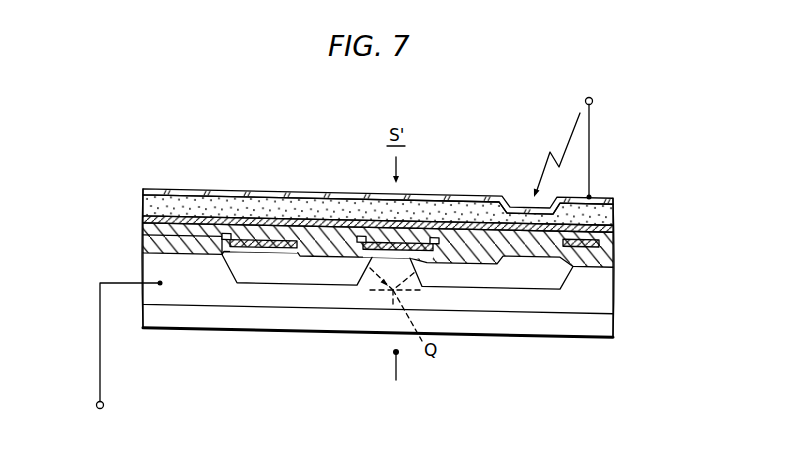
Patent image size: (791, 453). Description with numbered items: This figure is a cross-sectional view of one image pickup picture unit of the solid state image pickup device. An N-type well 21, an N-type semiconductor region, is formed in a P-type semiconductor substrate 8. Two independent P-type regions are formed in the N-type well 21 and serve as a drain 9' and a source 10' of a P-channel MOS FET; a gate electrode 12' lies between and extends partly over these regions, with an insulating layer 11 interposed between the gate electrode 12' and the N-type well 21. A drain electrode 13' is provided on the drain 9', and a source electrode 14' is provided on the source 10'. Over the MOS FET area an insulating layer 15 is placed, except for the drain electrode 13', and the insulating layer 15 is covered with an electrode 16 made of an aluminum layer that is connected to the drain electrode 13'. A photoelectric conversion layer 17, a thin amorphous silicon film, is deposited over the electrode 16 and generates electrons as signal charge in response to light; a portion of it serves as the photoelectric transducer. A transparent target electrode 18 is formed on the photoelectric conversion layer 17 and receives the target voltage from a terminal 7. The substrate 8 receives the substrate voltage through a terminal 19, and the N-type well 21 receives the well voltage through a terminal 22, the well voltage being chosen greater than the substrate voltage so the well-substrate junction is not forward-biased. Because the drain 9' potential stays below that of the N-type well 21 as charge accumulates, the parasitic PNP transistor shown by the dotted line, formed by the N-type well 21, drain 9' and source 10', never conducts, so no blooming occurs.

The terminal 7 is at (593, 100).
The P-type semiconductor substrate 8 is at (529, 347).
The drain 9' is at (491, 323).
The source 10' is at (297, 314).
The insulating layer 11 is at (150, 253).
The gate electrode 12' is at (398, 207).
The drain electrode 13' is at (570, 308).
The source electrode 14' is at (256, 200).
The insulating layer 15 is at (146, 233).
The electrode 16 is at (331, 223).
The photoelectric conversion layer 17 is at (479, 210).
The transparent electrode 18 is at (278, 196).
The terminal 19 is at (397, 371).
The N-type well 21 is at (604, 308).
The terminal 22 is at (104, 405).